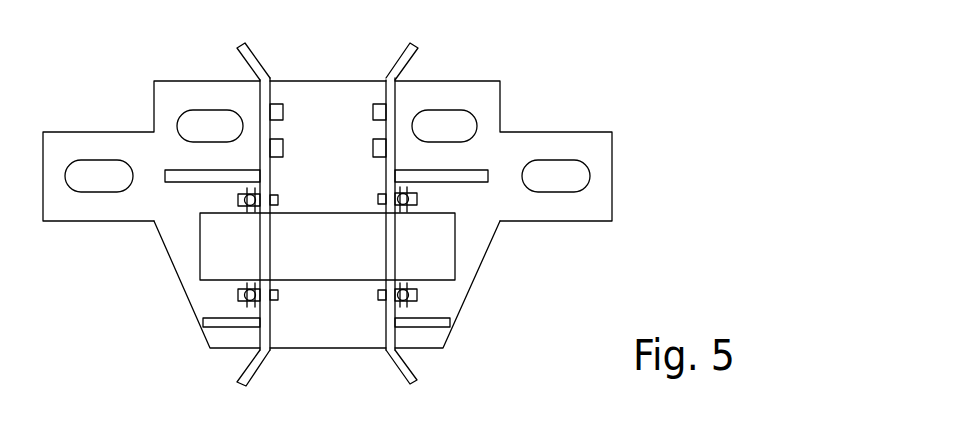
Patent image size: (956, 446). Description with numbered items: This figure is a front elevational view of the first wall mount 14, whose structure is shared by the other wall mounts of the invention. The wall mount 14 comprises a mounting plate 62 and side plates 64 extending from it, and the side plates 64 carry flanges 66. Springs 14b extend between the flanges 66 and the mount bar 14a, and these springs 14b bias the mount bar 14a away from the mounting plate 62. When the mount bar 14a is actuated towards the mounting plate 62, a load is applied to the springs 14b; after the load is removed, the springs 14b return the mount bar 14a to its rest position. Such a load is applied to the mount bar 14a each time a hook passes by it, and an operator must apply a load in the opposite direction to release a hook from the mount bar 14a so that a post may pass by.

The first wall mount 14 is at (95, 320).
The mount bar 14a is at (440, 250).
The springs 14b is at (243, 193).
The mounting plate 62 is at (475, 93).
The side plates 64 is at (250, 52).
The flanges 66 is at (238, 200).